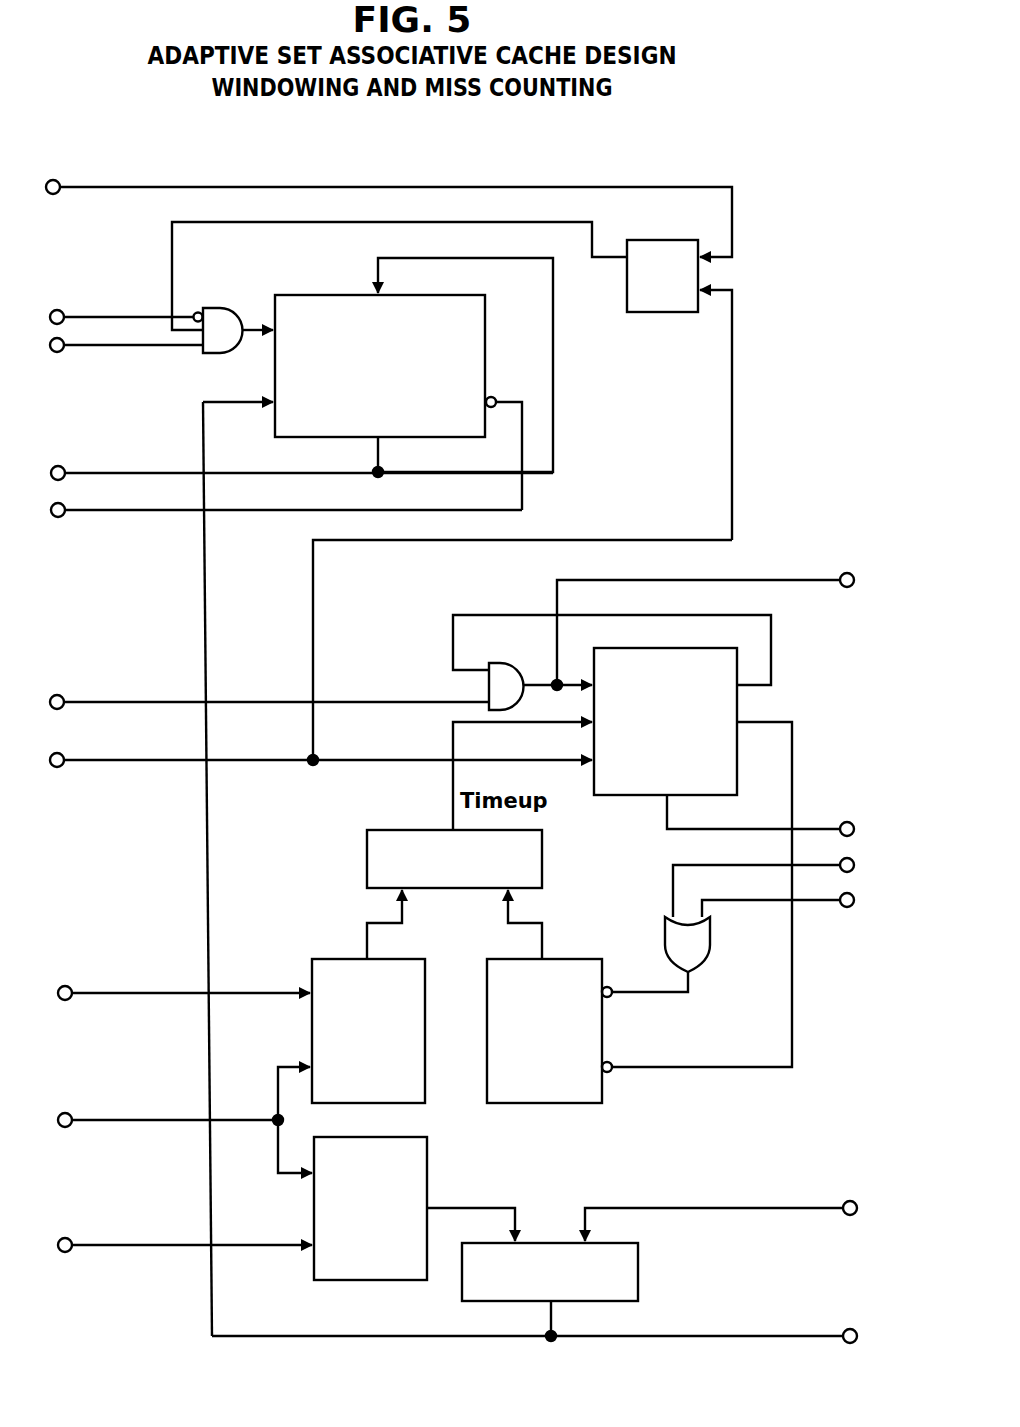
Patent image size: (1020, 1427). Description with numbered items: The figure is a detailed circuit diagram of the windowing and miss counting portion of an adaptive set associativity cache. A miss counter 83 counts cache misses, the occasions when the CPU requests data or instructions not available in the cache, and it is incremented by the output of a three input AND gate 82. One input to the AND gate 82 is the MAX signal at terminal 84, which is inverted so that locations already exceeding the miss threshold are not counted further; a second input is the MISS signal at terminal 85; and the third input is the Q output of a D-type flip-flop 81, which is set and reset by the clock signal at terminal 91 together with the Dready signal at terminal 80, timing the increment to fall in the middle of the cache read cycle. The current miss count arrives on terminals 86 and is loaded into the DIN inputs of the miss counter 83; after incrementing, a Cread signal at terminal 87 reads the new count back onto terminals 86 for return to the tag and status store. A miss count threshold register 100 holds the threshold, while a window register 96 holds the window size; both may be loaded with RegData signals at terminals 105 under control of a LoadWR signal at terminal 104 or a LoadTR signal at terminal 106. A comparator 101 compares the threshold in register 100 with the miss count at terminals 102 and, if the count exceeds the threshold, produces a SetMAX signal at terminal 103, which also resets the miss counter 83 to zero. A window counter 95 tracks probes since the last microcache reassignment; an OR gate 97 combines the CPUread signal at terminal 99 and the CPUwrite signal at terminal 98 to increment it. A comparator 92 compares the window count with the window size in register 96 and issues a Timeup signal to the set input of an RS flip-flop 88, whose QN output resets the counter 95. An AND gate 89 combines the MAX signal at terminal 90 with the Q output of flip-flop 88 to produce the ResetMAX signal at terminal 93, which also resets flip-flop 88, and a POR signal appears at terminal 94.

The Dready input terminal 80 is at (57, 181).
The D-type flip-flop 81 is at (655, 240).
The three input AND gate 82 is at (215, 308).
The miss counter 83 is at (485, 360).
The MAX signal terminal 84 is at (61, 311).
The MISS signal terminal 85 is at (60, 352).
The miss count terminals 86 is at (62, 467).
The Cread signal terminal 87 is at (61, 517).
The RS flip-flop 88 is at (690, 795).
The AND gate 89 is at (503, 663).
The MAX signal terminal 90 is at (61, 696).
The clock signal terminal 91 is at (61, 754).
The comparator 92 is at (542, 855).
The ResetMAX signal terminal 93 is at (851, 574).
The POR output terminal 94 is at (851, 823).
The window counter 95 is at (545, 1103).
The window register 96 is at (368, 1103).
The OR gate 97 is at (710, 945).
The CPUwrite signal terminal 98 is at (850, 907).
The CPUread signal terminal 99 is at (851, 859).
The miss count threshold register 100 is at (370, 1280).
The comparator 101 is at (638, 1275).
The miss count terminals 102 is at (854, 1202).
The SetMAX signal terminal 103 is at (854, 1330).
The LoadWR signal terminal 104 is at (69, 987).
The RegData signal terminals 105 is at (69, 1114).
The LoadTR signal terminal 106 is at (69, 1239).